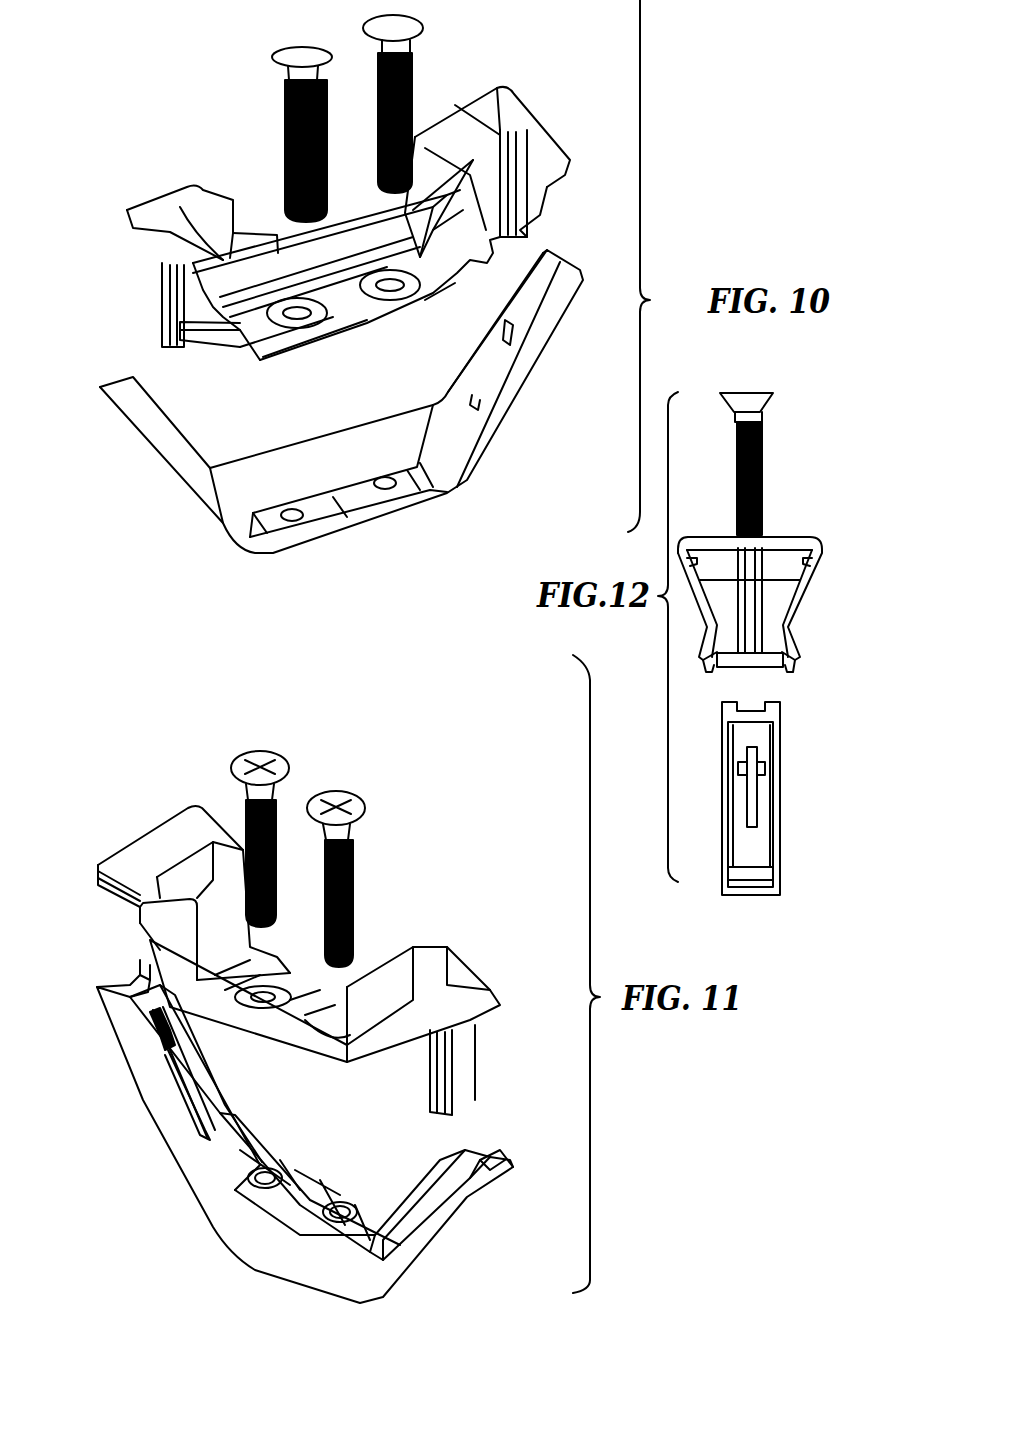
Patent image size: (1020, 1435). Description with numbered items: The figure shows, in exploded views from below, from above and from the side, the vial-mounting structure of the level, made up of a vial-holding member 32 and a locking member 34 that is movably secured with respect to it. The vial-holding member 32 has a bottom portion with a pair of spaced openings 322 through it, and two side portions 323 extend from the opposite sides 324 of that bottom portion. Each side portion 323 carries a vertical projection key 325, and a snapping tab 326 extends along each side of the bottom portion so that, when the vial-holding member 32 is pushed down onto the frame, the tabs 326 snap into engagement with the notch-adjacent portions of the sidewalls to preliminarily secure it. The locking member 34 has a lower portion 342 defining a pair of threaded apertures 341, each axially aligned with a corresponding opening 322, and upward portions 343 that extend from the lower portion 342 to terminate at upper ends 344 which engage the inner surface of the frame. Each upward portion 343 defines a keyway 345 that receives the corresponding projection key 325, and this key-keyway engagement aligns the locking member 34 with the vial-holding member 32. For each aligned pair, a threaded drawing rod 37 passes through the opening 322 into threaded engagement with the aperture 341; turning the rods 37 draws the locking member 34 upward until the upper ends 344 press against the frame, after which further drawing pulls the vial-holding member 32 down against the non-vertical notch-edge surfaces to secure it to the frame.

In FIG. 11, the vial-holding member 32 is at (170, 838).
In FIG. 11, the locking member 34 is at (253, 1218).
In FIG. 11, the threaded drawing rod 37 is at (360, 890).
In FIG. 10, the opening 322 is at (390, 287).
In FIG. 10, the side portion 323 is at (167, 227).
In FIG. 10, the side of bottom portion 324 is at (447, 293).
In FIG. 10, the vertical projection key 325 is at (513, 160).
In FIG. 12, the vertical projection key 325 is at (752, 600).
In FIG. 11, the vertical projection key 325 is at (443, 1050).
In FIG. 12, the snapping tab 326 is at (793, 682).
In FIG. 11, the threaded aperture 341 is at (340, 1210).
In FIG. 11, the lower portion 342 is at (283, 1233).
In FIG. 11, the upward portion 343 is at (140, 1067).
In FIG. 11, the upper end 344 is at (117, 990).
In FIG. 10, the keyway 345 is at (512, 348).
In FIG. 12, the keyway 345 is at (752, 755).
In FIG. 11, the keyway 345 is at (163, 1047).